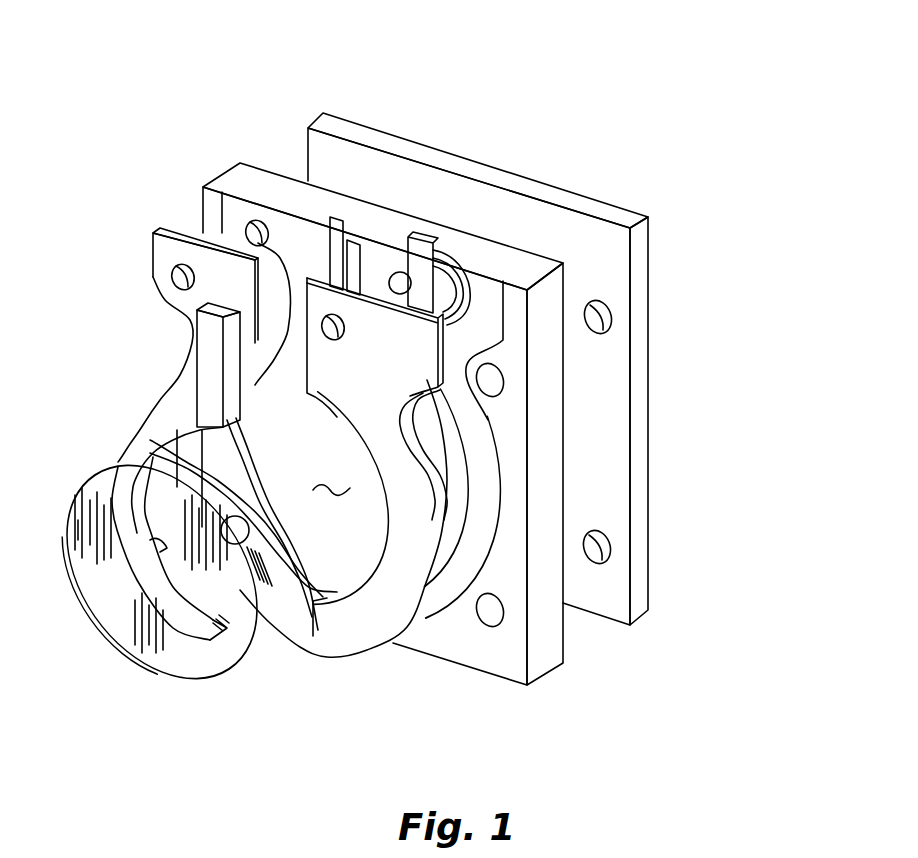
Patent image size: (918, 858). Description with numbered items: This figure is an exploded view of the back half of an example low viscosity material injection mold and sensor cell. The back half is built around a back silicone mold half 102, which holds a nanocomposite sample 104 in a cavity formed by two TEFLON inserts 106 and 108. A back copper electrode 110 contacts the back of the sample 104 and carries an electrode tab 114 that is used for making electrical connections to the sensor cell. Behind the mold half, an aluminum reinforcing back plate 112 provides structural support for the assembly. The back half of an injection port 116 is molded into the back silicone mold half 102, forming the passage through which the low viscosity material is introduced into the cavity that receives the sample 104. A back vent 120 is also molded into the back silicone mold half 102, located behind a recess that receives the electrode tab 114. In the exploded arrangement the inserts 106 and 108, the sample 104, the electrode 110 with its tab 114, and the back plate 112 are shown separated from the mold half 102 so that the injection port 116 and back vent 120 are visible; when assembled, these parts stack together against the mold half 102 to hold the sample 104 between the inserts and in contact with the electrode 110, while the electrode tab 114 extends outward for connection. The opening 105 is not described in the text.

The back silicone mold half 102 is at (548, 670).
The nanocomposite sample 104 is at (183, 683).
The tube receiving opening 105 is at (330, 488).
The TEFLON insert 106 is at (354, 655).
The TEFLON insert 108 is at (128, 447).
The back copper electrode 110 is at (256, 243).
The aluminum reinforcing back plate 112 is at (650, 577).
The electrode tab 114 is at (427, 243).
The injection port 116 is at (308, 220).
The back vent 120 is at (470, 263).